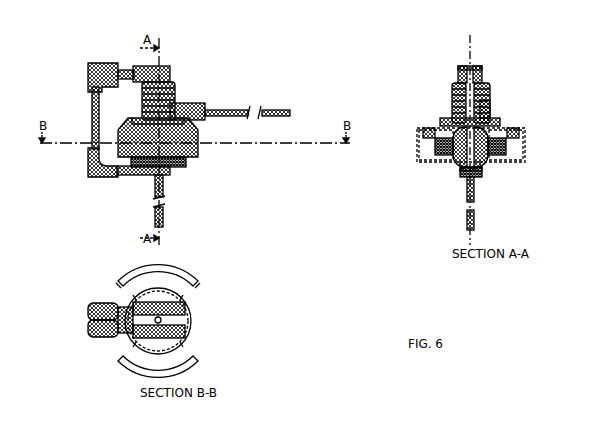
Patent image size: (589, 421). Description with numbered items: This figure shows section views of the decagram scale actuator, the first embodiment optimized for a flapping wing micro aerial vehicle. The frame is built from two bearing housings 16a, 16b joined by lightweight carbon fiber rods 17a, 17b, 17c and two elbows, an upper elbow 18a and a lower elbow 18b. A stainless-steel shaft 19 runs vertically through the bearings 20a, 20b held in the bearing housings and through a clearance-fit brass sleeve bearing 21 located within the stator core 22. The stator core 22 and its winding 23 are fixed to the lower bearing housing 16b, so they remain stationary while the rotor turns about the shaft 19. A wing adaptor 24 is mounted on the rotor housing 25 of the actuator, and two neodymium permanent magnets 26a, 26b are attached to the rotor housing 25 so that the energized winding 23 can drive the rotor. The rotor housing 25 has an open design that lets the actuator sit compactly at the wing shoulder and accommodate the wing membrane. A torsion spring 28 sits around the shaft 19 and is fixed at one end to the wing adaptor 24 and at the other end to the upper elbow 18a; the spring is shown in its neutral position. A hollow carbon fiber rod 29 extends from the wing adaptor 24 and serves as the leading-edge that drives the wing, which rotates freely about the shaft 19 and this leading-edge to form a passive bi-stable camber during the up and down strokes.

The bearing housing 16a is at (168, 66).
The bearing housing 16b is at (185, 166).
The carbon fiber rod 17a is at (127, 70).
The carbon fiber rod 17b is at (92, 118).
The carbon fiber rod 17c is at (120, 174).
The upper elbow 18a is at (92, 63).
The lower elbow 18b is at (88, 166).
The stainless-steel shaft 19 is at (156, 180).
The bearing 20a is at (462, 66).
The bearing 20b is at (468, 178).
The brass sleeve bearing 21 is at (490, 158).
The stator core 22 is at (450, 158).
The winding 23 is at (190, 160).
The wing adaptor 24 is at (185, 104).
The rotor housing 25 is at (198, 150).
The neodymium permanent magnet 26a is at (430, 150).
The neodymium permanent magnet 26b is at (512, 142).
The torsion spring 28 is at (145, 100).
The hollow carbon fiber rod 29 is at (268, 110).